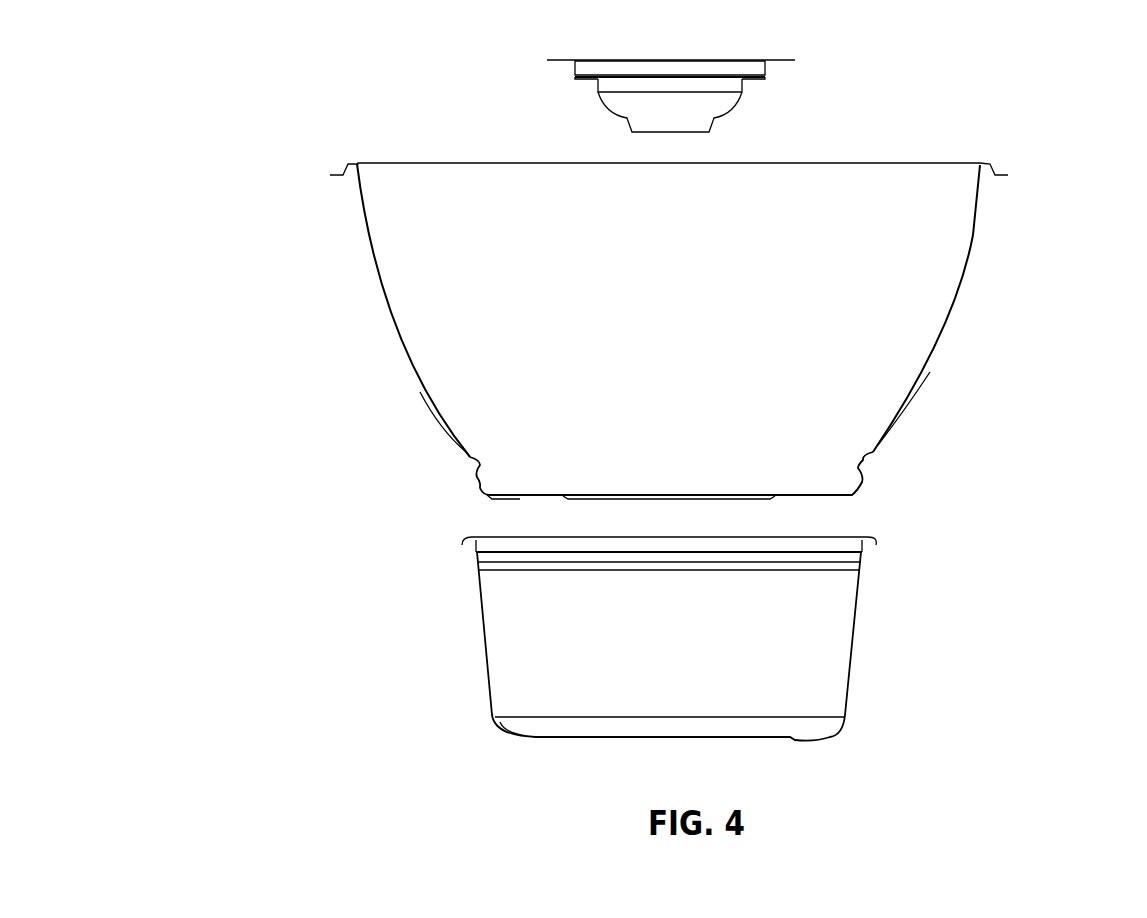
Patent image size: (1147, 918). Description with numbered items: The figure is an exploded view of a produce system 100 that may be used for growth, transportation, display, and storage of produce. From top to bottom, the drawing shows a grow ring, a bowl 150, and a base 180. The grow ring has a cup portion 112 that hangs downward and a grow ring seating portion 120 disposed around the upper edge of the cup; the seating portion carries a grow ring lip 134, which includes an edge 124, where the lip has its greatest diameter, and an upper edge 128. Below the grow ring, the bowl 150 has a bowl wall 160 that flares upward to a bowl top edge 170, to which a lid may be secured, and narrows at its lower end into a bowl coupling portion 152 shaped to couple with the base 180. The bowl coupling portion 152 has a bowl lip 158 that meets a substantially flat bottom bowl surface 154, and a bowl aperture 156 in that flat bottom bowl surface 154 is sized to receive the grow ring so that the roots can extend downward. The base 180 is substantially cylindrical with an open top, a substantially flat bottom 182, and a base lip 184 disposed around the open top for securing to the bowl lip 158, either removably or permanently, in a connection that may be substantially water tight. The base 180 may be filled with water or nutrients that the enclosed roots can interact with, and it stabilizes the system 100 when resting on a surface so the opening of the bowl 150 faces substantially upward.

The produce system 100 is at (1008, 50).
The cup portion 112 is at (800, 80).
The grow ring seating portion 120 is at (800, 53).
The edge 124 is at (575, 80).
The upper edge 128 is at (570, 62).
The grow ring lip 134 is at (500, 72).
The bowl 150 is at (303, 161).
The bowl coupling portion 152 is at (433, 453).
The substantially flat bottom bowl surface 154 is at (514, 497).
The bowl aperture 156 is at (677, 507).
The bowl lip 158 is at (867, 486).
The bowl wall 160 is at (674, 380).
The bowl top edge 170 is at (333, 155).
The base 180 is at (668, 666).
The substantially flat bottom 182 is at (525, 742).
The base lip 184 is at (880, 552).